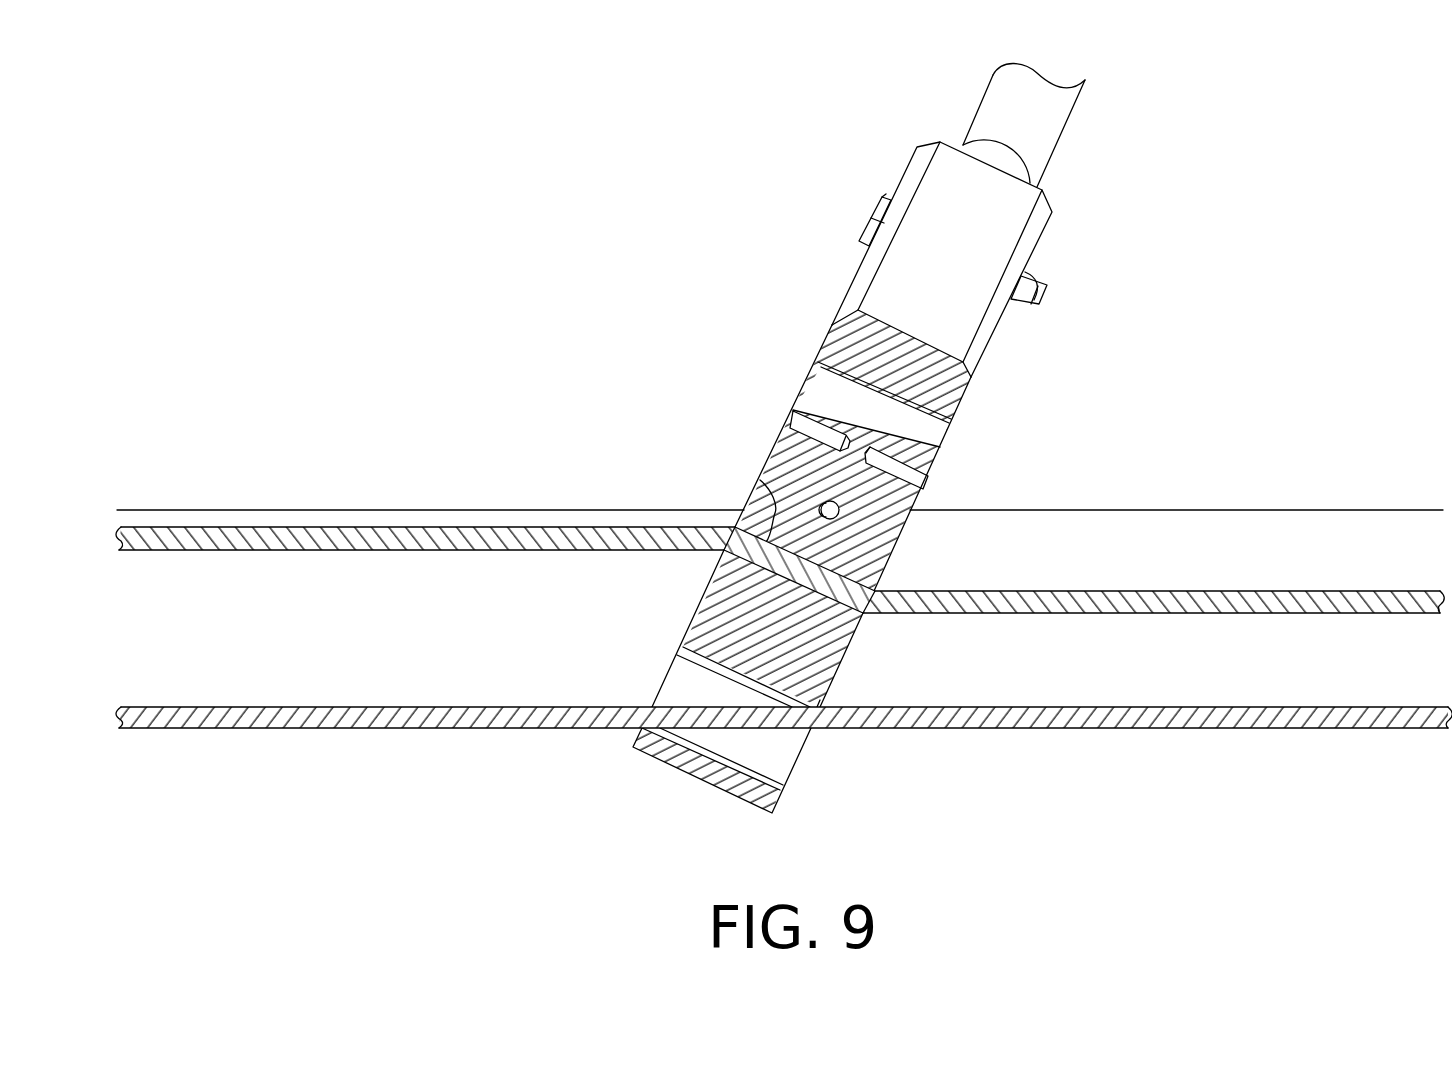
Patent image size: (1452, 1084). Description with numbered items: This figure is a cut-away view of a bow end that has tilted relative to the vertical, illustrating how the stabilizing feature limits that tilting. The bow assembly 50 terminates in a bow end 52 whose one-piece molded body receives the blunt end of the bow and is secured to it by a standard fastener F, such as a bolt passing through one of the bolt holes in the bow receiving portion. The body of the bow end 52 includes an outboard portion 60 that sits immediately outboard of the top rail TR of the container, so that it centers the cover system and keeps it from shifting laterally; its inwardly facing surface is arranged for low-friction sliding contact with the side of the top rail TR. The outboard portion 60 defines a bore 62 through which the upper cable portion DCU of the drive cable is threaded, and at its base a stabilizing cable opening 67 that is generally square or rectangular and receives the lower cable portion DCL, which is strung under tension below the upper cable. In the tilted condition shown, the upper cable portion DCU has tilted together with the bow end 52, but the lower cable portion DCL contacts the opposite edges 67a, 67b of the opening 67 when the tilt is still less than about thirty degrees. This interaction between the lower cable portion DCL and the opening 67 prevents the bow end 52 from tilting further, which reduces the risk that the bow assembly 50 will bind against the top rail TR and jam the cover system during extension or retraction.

The bow assembly 50 is at (1068, 137).
The bow end 52 is at (1006, 338).
The fastener F is at (1028, 280).
The outboard portion 60 is at (842, 638).
The bore 62 is at (766, 486).
The stabilizing cable opening 67 is at (707, 662).
The edge of the opening 67a is at (642, 727).
The edge of the opening 67b is at (818, 708).
The top rail TR is at (1119, 510).
The upper cable portion DCU is at (1131, 598).
The lower cable portion DCL is at (1018, 713).